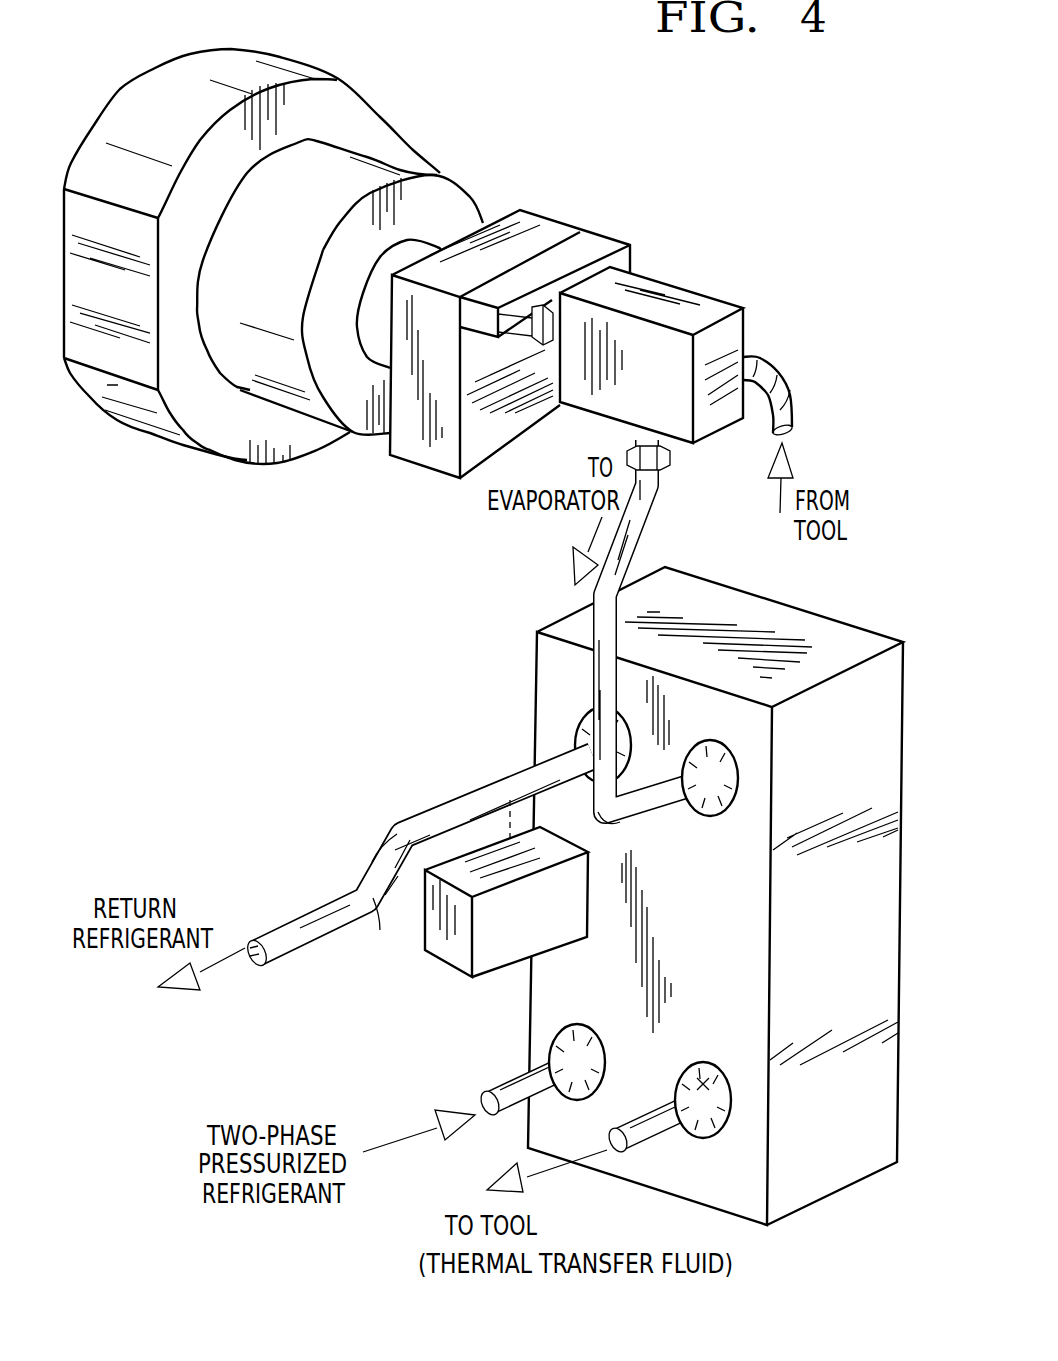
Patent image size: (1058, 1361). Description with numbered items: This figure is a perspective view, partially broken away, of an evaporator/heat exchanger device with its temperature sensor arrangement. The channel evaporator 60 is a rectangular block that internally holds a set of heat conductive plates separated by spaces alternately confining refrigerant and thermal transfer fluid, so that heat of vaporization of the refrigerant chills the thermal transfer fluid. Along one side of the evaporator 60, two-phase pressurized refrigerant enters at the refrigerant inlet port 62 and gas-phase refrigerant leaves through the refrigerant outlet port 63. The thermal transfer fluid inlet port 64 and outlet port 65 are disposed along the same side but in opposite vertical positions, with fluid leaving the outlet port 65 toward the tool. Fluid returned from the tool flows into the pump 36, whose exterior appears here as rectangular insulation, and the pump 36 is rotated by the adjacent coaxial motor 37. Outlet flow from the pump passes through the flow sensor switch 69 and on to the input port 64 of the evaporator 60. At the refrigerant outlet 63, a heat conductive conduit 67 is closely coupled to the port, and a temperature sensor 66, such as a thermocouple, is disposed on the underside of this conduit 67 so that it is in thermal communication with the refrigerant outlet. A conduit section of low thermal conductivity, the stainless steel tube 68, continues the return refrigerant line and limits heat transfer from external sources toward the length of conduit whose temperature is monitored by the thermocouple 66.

The coaxial motor 37 is at (393, 175).
The pump 36 is at (540, 240).
The flow sensor switch 69 is at (668, 300).
The channel evaporator 60 is at (817, 647).
The refrigerant outlet port 63 is at (583, 725).
The thermal transfer fluid inlet port 64 is at (730, 793).
The heat conductive conduit 67 is at (478, 793).
The stainless steel tube 68 is at (318, 920).
The temperature sensor 66 is at (455, 947).
The refrigerant inlet port 62 is at (562, 1030).
The thermal transfer fluid outlet port 65 is at (698, 1063).